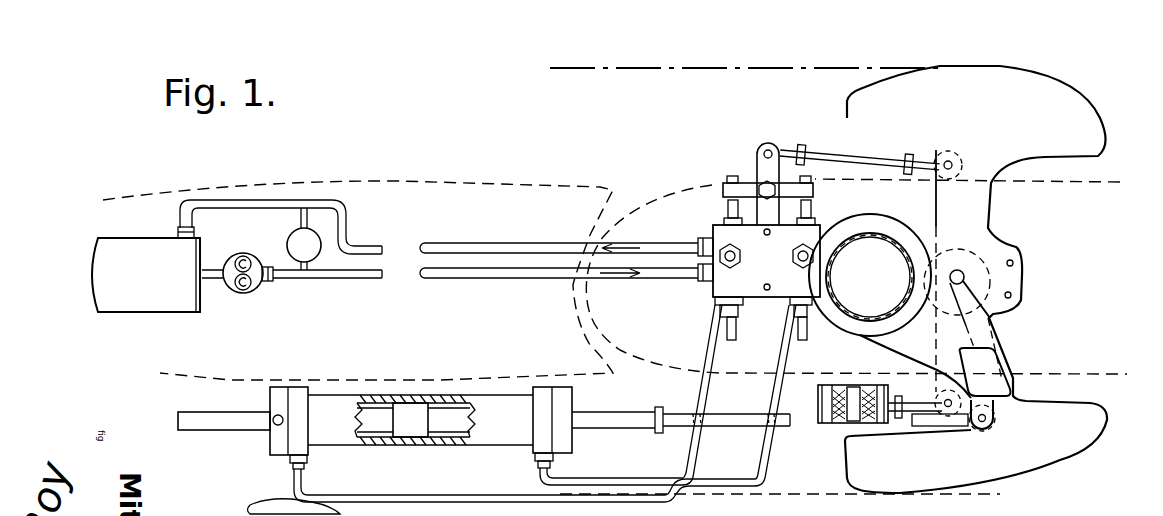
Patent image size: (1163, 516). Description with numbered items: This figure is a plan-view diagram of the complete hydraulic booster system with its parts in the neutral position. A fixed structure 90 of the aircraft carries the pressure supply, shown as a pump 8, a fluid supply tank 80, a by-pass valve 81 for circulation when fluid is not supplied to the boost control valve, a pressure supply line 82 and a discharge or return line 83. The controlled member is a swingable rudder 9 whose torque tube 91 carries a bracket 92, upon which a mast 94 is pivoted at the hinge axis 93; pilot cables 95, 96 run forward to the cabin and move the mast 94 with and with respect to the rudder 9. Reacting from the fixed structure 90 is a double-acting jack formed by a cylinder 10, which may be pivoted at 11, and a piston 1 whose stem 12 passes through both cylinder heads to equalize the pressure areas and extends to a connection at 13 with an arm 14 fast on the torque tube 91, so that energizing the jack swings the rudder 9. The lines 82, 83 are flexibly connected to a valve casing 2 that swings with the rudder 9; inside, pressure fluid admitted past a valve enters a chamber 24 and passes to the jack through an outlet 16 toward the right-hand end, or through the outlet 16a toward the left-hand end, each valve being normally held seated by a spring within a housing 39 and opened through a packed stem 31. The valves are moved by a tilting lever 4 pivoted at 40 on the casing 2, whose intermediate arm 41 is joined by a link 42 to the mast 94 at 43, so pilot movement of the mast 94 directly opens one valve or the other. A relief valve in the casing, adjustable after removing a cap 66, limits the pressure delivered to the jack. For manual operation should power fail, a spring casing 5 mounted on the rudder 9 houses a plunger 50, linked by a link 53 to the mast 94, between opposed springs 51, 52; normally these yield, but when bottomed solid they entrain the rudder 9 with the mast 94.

The piston 1 is at (405, 420).
The valve casing 2 is at (713, 225).
The tilting lever 4 is at (760, 160).
The spring casing 5 is at (822, 427).
The pump 8 is at (233, 291).
The rudder 9 is at (1118, 183).
The cylinder 10 is at (453, 392).
The pivot 11 is at (278, 414).
The stem 12 is at (613, 428).
The connection 13 is at (993, 425).
The arm 14 is at (1000, 346).
The outlet 16 is at (787, 362).
The outlet 16a is at (712, 348).
The chamber 24 is at (265, 505).
The stem 31 is at (723, 207).
The housing 39 is at (737, 328).
The pivot 40 is at (755, 187).
The intermediate arm 41 is at (762, 147).
The link 42 is at (830, 160).
The connection 43 is at (948, 160).
The plunger 50 is at (808, 423).
The spring 51 is at (833, 398).
The spring 52 is at (867, 389).
The link 53 is at (911, 403).
The cap 66 is at (800, 258).
The fluid supply tank 80 is at (157, 269).
The by-pass valve 81 is at (313, 262).
The pressure supply line 82 is at (510, 282).
The discharge or return line 83 is at (503, 247).
The fixed structure 90 is at (428, 182).
The torque tube 91 is at (882, 239).
The bracket 92 is at (880, 216).
The hinge axis 93 is at (993, 303).
The mast 94 is at (976, 279).
The cable 95 is at (713, 496).
The cable 96 is at (700, 66).